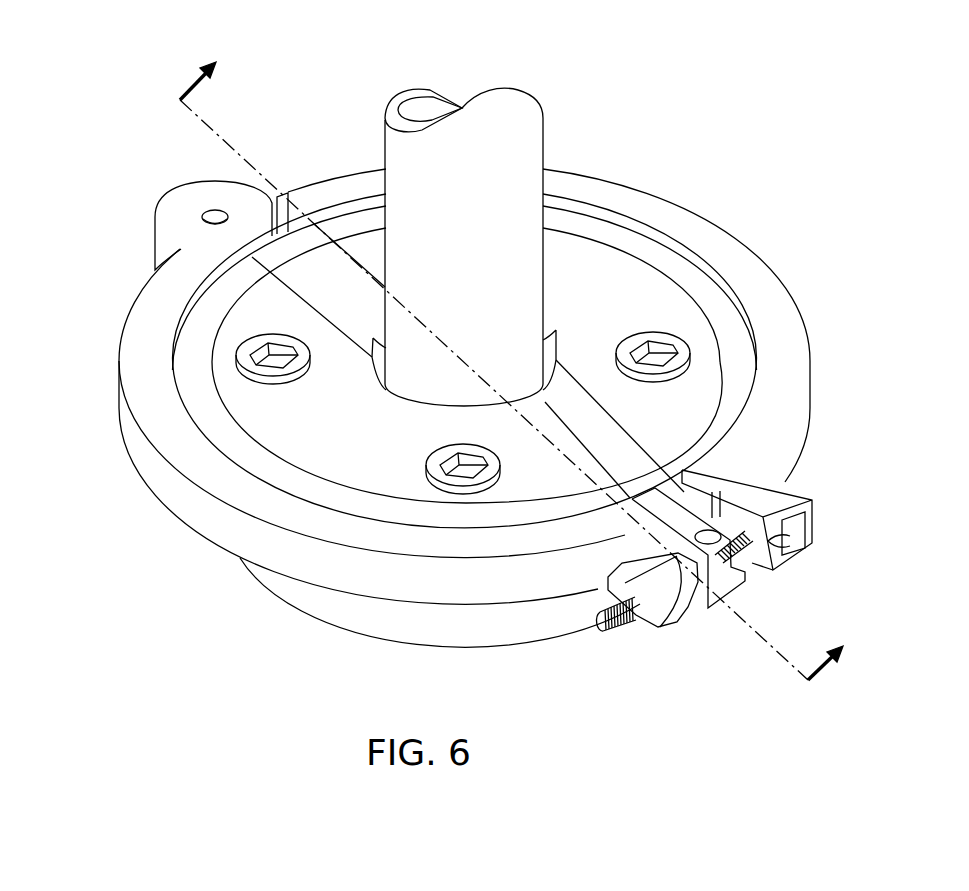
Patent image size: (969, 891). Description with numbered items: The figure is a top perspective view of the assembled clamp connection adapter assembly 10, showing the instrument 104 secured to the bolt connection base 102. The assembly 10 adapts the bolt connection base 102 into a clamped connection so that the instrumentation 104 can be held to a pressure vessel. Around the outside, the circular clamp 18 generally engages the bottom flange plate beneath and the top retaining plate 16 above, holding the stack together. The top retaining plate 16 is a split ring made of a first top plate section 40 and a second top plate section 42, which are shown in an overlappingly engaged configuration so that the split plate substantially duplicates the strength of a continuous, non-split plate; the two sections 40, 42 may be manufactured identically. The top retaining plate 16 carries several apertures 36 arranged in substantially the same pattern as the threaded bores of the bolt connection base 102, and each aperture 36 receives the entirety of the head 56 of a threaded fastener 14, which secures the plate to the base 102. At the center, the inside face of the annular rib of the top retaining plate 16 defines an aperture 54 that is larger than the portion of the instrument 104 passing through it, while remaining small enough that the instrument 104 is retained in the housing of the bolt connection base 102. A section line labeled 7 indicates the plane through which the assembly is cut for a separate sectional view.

The clamp connection adapter assembly 10 is at (124, 128).
The section line 7- 7 is at (519, 357).
The fasteners 14 is at (447, 452).
The top retaining plate 16 is at (320, 450).
The clamp 18 is at (166, 516).
The aperture 36 is at (663, 382).
The first top plate section 40 is at (230, 393).
The second top plate section 42 is at (597, 248).
The aperture 54 is at (550, 354).
The head 56 is at (655, 334).
The bolt connection base 102 is at (358, 628).
The instrumentation 104 is at (545, 130).